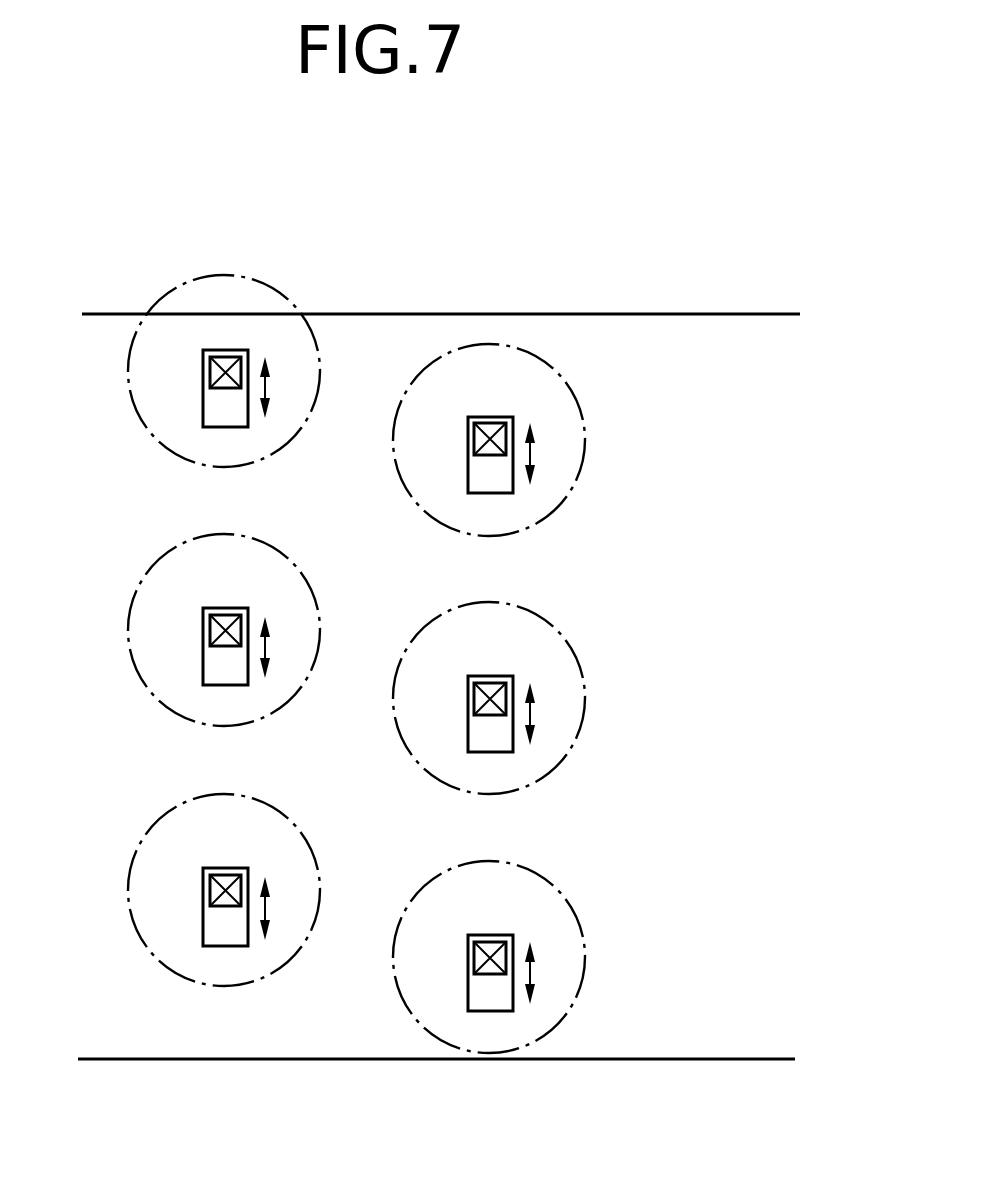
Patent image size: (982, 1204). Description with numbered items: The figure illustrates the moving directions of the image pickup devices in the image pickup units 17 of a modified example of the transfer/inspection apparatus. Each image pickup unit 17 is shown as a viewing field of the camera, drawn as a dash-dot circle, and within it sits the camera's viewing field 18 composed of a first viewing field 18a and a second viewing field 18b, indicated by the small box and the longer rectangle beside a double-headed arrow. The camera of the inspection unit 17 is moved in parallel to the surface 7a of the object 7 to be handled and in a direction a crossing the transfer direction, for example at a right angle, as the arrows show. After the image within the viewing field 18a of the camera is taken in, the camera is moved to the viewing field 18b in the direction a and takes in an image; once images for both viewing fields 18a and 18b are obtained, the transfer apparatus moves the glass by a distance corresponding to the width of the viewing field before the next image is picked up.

The board 7 is at (768, 315).
The surface of board 7a is at (805, 493).
The image pickup unit 17 is at (562, 371).
The electronic component 18 is at (252, 346).
The viewing field 18a is at (207, 360).
The viewing field 18b is at (225, 408).
The direction a is at (268, 385).